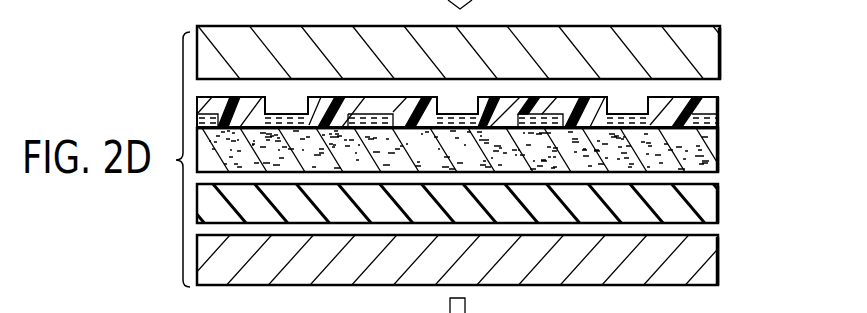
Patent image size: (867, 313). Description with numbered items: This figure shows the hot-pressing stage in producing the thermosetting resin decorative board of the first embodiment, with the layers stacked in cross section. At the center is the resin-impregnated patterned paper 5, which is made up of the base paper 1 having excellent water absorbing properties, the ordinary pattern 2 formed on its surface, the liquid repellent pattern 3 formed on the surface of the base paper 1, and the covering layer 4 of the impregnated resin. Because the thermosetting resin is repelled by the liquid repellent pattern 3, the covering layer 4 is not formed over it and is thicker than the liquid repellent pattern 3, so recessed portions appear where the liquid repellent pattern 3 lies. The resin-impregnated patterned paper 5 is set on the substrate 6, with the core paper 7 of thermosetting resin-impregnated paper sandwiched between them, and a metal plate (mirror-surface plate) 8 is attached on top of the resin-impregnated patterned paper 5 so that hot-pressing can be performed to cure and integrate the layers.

The base paper 1 is at (718, 162).
The ordinary pattern 2 is at (715, 128).
The liquid repellent pattern 3 is at (625, 113).
The covering layer of the impregnated resin 4 is at (715, 103).
The resin-impregnated patterned paper 5 is at (758, 78).
The substrate 6 is at (712, 248).
The core paper 7 is at (710, 202).
The metal plate (mirror-surface plate) 8 is at (718, 50).